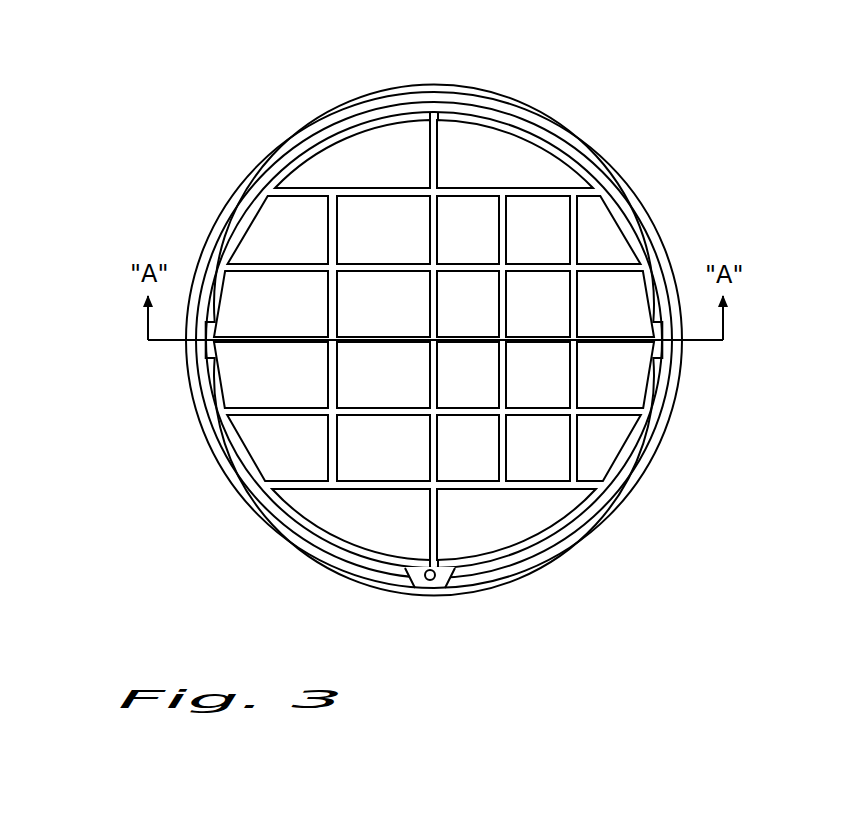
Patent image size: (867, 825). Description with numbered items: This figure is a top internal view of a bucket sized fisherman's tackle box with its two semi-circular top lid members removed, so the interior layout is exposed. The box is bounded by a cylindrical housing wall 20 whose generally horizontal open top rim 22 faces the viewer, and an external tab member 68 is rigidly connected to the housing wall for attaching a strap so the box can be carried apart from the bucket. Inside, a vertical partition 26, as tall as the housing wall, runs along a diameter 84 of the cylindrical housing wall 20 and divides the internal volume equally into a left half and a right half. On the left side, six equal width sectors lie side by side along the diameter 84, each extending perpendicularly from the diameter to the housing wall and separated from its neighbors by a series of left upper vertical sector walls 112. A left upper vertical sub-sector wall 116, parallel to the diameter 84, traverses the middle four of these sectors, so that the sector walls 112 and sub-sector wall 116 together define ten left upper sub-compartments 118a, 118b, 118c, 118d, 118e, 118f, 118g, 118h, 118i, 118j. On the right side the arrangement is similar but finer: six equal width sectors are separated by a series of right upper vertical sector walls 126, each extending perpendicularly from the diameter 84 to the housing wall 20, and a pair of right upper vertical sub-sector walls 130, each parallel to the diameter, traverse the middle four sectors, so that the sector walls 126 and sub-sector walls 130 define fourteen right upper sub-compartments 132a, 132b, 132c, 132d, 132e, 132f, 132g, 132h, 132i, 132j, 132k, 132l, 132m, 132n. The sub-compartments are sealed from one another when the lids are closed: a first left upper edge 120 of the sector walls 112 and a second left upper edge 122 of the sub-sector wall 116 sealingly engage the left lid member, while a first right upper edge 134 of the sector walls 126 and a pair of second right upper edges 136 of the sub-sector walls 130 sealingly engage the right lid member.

The cylindrical housing wall 20 is at (640, 243).
The open top rim 22 is at (296, 162).
The vertical partition 26 is at (441, 315).
The external tab member 68 is at (449, 586).
The diameter 84 is at (436, 115).
The left upper vertical sector walls 112 is at (385, 185).
The left upper vertical sub-sector wall 116 is at (327, 311).
The left upper sub-compartment 118a is at (361, 522).
The left upper sub-compartment 118b is at (386, 440).
The left upper sub-compartment 118c is at (292, 440).
The left upper sub-compartment 118d is at (267, 373).
The left upper sub-compartment 118e is at (387, 373).
The left upper sub-compartment 118f is at (389, 300).
The left upper sub-compartment 118g is at (274, 300).
The left upper sub-compartment 118h is at (314, 228).
The left upper sub-compartment 118i is at (389, 228).
The left upper sub-compartment 118j is at (414, 157).
The first left upper edge 120 is at (413, 197).
The second left upper edge 122 is at (328, 238).
The right upper vertical sector walls 126 is at (563, 201).
The right upper vertical sub-sector walls 130 is at (566, 313).
The right upper sub-compartment 132a is at (486, 550).
The right upper sub-compartment 132b is at (489, 458).
The right upper sub-compartment 132c is at (556, 443).
The right upper sub-compartment 132d is at (624, 443).
The right upper sub-compartment 132e is at (624, 372).
The right upper sub-compartment 132f is at (552, 372).
The right upper sub-compartment 132g is at (486, 372).
The right upper sub-compartment 132h is at (486, 300).
The right upper sub-compartment 132i is at (550, 300).
The right upper sub-compartment 132j is at (624, 300).
The right upper sub-compartment 132k is at (624, 257).
The right upper sub-compartment 132l is at (552, 226).
The right upper sub-compartment 132m is at (491, 226).
The right upper sub-compartment 132n is at (509, 169).
The first right upper edge 134 is at (490, 198).
The second right upper edges 136 is at (563, 328).